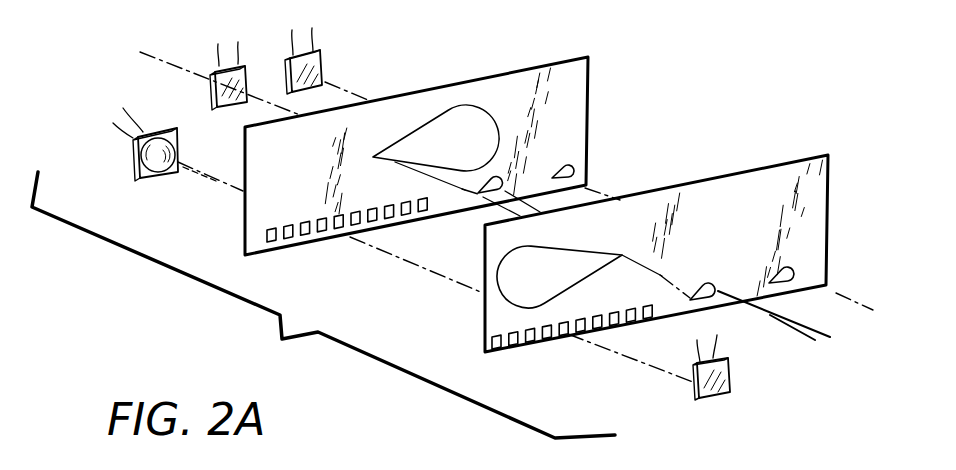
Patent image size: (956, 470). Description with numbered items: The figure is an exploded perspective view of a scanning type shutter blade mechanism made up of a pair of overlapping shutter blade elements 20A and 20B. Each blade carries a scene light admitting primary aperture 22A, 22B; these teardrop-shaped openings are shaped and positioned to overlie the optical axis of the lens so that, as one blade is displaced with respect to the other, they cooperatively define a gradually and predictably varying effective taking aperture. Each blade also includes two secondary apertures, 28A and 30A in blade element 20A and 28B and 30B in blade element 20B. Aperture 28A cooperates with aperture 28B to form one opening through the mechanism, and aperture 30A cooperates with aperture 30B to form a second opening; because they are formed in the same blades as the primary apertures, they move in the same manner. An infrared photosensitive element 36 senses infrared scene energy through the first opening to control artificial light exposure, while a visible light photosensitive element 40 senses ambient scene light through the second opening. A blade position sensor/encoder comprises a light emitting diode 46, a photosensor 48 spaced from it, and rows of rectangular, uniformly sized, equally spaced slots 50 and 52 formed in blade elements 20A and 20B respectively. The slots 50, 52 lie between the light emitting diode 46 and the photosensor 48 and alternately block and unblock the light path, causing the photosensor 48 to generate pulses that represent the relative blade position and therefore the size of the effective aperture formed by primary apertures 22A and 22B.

The shutter blade element 20A is at (722, 176).
The shutter blade element 20B is at (538, 66).
The primary aperture 22A is at (520, 290).
The primary aperture 22B is at (450, 130).
The secondary aperture 28A is at (713, 285).
The secondary aperture 28B is at (492, 197).
The secondary aperture 30A is at (777, 272).
The secondary aperture 30B is at (572, 172).
The infrared photosensitive element 36 is at (212, 75).
The visible light photosensitive element 40 is at (323, 62).
The light emitting diode 46 is at (163, 178).
The photosensor 48 is at (728, 376).
The slots 50 is at (507, 340).
The slots 52 is at (283, 244).